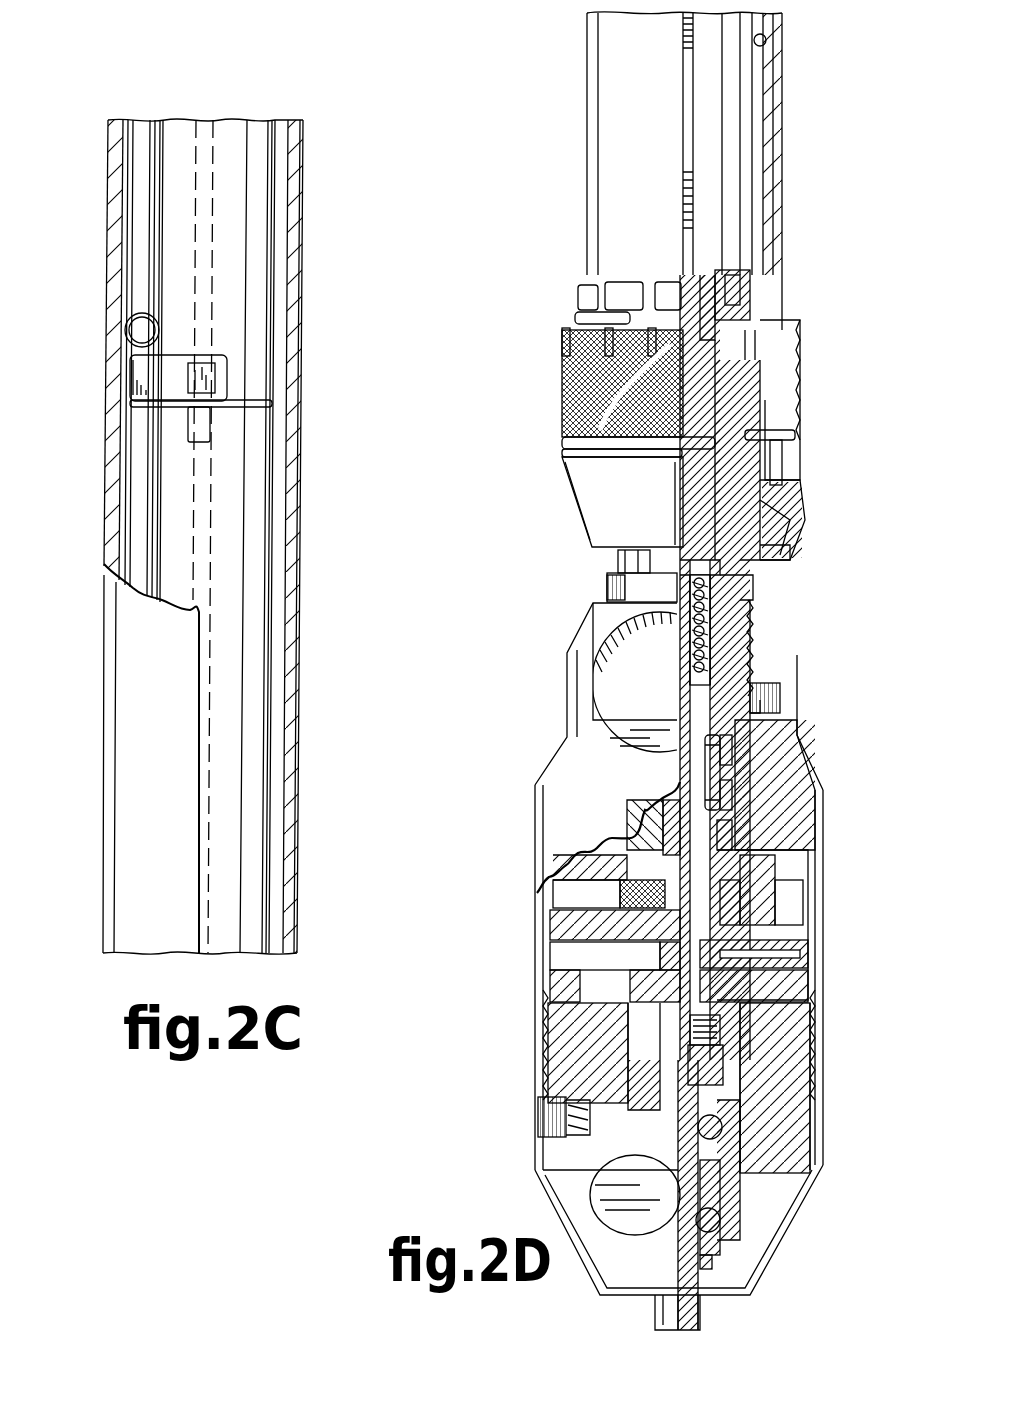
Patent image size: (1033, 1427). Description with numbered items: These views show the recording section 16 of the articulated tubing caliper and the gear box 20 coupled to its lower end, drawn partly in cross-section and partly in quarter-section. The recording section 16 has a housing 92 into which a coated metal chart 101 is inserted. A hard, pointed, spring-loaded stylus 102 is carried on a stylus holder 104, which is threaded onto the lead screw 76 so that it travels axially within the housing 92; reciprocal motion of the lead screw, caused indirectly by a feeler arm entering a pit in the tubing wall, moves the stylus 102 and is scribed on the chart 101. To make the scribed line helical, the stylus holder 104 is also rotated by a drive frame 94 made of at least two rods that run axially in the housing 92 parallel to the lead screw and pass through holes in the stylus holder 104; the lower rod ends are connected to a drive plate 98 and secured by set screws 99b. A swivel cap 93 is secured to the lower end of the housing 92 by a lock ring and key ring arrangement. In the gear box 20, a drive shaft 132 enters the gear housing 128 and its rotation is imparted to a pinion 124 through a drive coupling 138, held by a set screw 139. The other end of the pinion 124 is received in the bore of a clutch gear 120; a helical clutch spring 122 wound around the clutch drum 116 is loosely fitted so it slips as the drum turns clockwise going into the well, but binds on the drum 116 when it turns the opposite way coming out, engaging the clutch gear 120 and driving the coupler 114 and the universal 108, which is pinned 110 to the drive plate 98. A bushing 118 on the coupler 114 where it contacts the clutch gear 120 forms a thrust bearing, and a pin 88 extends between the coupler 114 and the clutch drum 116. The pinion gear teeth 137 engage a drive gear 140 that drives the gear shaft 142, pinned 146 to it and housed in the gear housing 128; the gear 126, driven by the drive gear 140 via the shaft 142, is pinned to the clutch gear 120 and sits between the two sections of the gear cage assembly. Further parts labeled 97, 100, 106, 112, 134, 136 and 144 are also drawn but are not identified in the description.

In FIG. 2C, the recording section 16 is at (299, 613).
In FIG. 2D, the recording section 16 is at (785, 204).
In FIG. 2D, the gear box 20 is at (832, 997).
In FIG. 2C, the lead screw 76 is at (212, 535).
In FIG. 2D, the lead screw 76 is at (694, 148).
In FIG. 2D, the pin 88 is at (728, 745).
In FIG. 2C, the recording section housing 92 is at (288, 683).
In FIG. 2D, the recording section housing 92 is at (775, 88).
In FIG. 2D, the swivel cap 93 is at (782, 490).
In FIG. 2C, the drive frame 94 is at (262, 246).
In FIG. 2C, the sleeve 97 is at (272, 742).
In FIG. 2D, the drive plate 98 is at (708, 278).
In FIG. 2D, the set screws 99b is at (750, 300).
In FIG. 2C, the clamp block 100 is at (230, 380).
In FIG. 2C, the chart 101 is at (277, 460).
In FIG. 2D, the chart 101 is at (766, 44).
In FIG. 2C, the stylus 102 is at (132, 376).
In FIG. 2C, the stylus holder 104 is at (212, 355).
In FIG. 2D, the threaded body 106 is at (746, 395).
In FIG. 2D, the universal 108 is at (692, 535).
In FIG. 2D, the pin 110 is at (712, 446).
In FIG. 2D, the central column 112 is at (722, 585).
In FIG. 2D, the coupler 114 is at (706, 692).
In FIG. 2D, the clutch drum 116 is at (737, 832).
In FIG. 2D, the bushing 118 is at (733, 768).
In FIG. 2D, the clutch gear 120 is at (777, 800).
In FIG. 2D, the clutch spring 122 is at (762, 852).
In FIG. 2D, the pinion 124 is at (640, 838).
In FIG. 2D, the gear 126 is at (620, 899).
In FIG. 2D, the gear housing 128 is at (822, 902).
In FIG. 2D, the drive shaft 132 is at (698, 1318).
In FIG. 2D, the O-ring 134 is at (720, 1120).
In FIG. 2D, the sleeve 136 is at (737, 1180).
In FIG. 2D, the pinion gear teeth 137 is at (658, 953).
In FIG. 2D, the drive coupling 138 is at (722, 1052).
In FIG. 2D, the set screw 139 is at (727, 1030).
In FIG. 2D, the drive gear 140 is at (822, 998).
In FIG. 2D, the gear shaft 142 is at (760, 915).
In FIG. 2D, the plate 144 is at (580, 868).
In FIG. 2D, the pin 146 is at (795, 944).